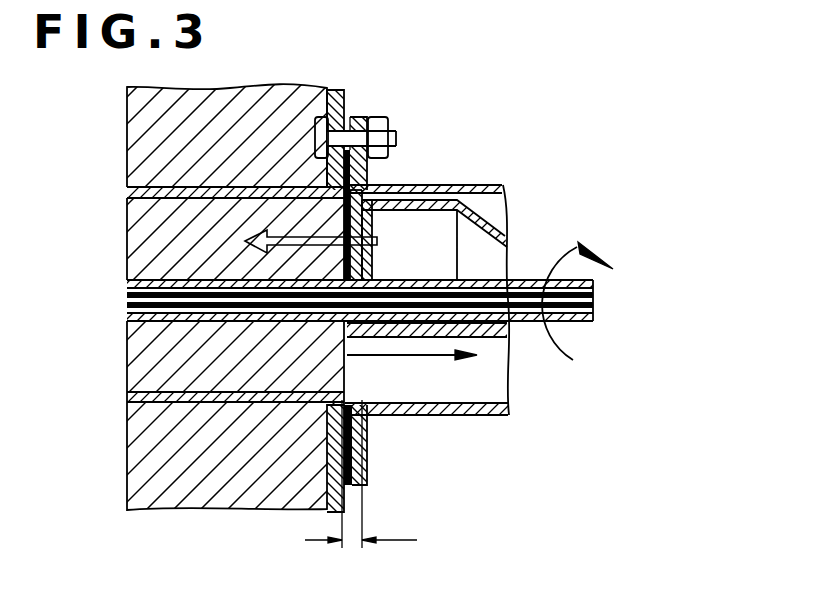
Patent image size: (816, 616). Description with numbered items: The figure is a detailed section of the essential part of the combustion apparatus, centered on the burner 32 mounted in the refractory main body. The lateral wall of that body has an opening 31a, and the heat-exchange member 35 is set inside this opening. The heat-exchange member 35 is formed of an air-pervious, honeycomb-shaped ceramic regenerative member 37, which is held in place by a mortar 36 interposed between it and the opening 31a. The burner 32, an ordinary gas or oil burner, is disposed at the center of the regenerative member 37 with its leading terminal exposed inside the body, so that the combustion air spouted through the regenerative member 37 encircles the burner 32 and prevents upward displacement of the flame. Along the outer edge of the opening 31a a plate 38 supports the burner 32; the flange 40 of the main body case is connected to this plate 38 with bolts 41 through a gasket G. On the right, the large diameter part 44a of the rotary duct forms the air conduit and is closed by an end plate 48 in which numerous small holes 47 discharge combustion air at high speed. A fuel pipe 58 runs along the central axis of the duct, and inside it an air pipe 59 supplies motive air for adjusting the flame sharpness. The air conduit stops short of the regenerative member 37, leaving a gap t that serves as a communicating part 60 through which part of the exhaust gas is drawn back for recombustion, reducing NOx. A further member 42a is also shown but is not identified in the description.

The mortar 36 is at (183, 187).
The opening 31a is at (140, 206).
The regenerative member 37 is at (147, 250).
The burner 32 is at (118, 297).
The heat-exchange member 35 is at (113, 380).
The plate 38 is at (336, 90).
The gasket G is at (349, 118).
The flange 40 is at (352, 118).
The bolts 41 is at (393, 138).
The housing plate 42a is at (487, 185).
The end plate 48 is at (389, 198).
The large diameter part 44a is at (418, 210).
The small holes 47 is at (375, 257).
The air pipe 59 is at (597, 297).
The fuel pipe 58 is at (580, 323).
The communicating part 60 is at (353, 328).
The gap t is at (361, 490).